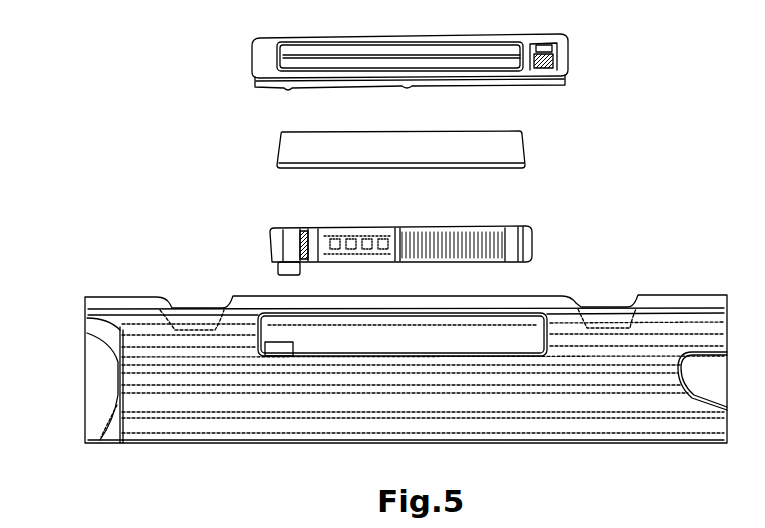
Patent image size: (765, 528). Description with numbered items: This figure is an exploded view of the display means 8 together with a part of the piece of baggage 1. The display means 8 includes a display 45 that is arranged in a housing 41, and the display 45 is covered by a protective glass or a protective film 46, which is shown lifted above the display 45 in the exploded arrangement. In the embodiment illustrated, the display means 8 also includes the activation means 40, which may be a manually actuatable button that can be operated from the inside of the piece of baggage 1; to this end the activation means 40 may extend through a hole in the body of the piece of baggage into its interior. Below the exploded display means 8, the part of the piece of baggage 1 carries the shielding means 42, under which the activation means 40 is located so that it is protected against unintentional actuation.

The piece of baggage 1 is at (62, 277).
The display means 8 is at (132, 122).
The activation means 40 is at (272, 266).
The housing 41 is at (562, 63).
The shielding means 42 is at (278, 348).
The display 45 is at (522, 238).
The protective film 46 is at (512, 146).